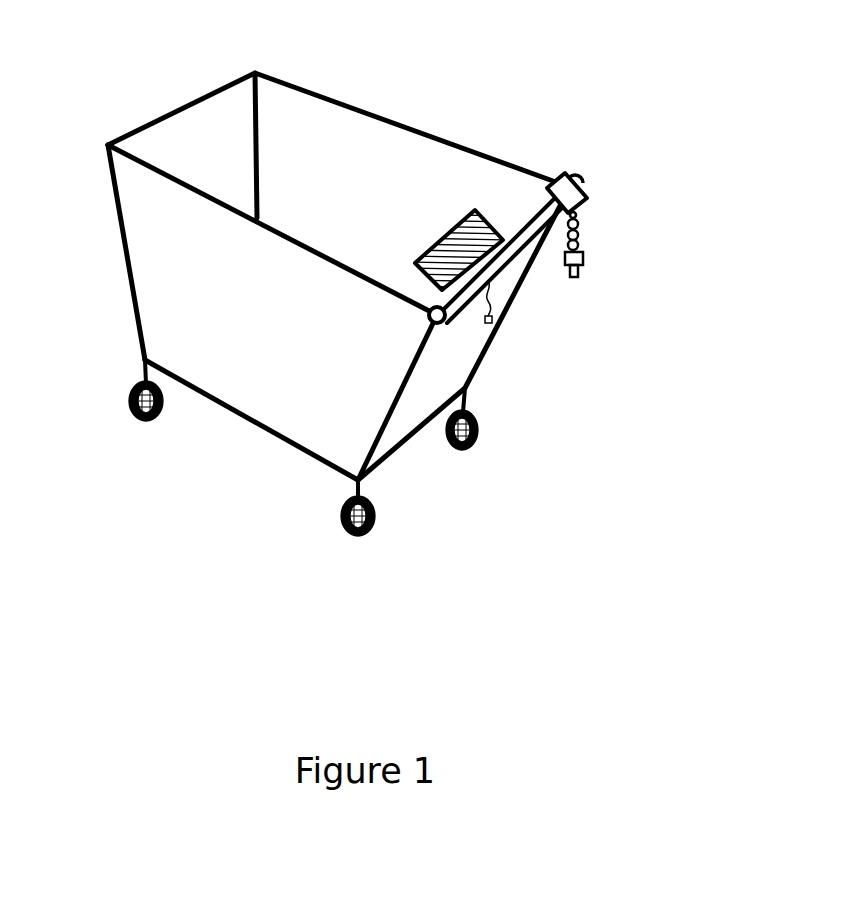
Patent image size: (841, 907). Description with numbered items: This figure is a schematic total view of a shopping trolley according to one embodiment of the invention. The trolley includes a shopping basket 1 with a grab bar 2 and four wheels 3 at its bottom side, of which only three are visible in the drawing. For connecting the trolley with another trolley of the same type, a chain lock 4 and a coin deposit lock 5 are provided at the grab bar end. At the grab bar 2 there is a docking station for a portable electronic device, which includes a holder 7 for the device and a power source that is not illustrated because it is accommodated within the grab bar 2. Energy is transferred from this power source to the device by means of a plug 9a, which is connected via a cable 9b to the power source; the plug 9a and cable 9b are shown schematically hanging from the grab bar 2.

The shopping basket 1 is at (378, 117).
The grab bar 2 is at (523, 233).
The wheels 3 is at (127, 400).
The chain lock 4 is at (584, 263).
The coin deposit lock 5 is at (565, 186).
The holder 7 is at (470, 220).
The plug 9a is at (483, 330).
The cable 9b is at (498, 298).